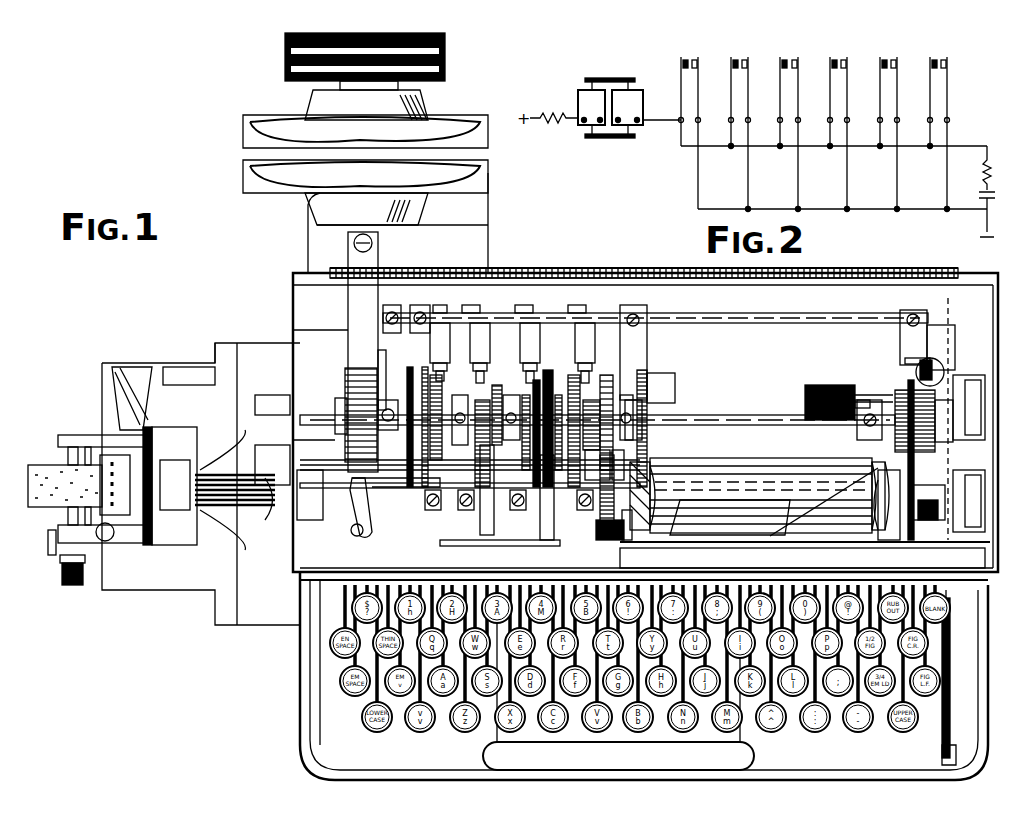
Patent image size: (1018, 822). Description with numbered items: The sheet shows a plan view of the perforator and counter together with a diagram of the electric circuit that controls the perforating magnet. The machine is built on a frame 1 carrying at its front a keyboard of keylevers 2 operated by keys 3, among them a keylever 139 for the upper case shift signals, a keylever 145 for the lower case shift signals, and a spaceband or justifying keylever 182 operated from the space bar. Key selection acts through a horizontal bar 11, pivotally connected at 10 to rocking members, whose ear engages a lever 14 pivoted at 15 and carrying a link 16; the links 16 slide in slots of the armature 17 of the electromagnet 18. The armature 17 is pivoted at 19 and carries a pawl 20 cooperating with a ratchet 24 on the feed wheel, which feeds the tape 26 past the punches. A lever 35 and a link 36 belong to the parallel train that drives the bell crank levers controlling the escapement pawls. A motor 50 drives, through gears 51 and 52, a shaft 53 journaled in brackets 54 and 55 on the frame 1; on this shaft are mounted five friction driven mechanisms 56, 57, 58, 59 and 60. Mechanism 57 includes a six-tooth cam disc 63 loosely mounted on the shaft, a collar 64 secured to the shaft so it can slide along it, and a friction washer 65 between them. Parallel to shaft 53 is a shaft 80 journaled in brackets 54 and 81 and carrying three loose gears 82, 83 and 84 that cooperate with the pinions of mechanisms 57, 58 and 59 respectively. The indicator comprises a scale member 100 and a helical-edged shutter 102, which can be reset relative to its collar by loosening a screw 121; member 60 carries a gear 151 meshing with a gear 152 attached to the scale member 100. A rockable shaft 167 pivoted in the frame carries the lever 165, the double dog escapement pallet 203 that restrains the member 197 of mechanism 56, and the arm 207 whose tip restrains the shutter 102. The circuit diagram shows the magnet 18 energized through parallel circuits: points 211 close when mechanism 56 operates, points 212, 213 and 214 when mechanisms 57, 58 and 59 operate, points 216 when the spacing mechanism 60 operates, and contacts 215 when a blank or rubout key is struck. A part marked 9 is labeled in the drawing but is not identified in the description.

In FIG. 1, the frame 1 is at (312, 683).
In FIG. 1, the keylever 2 is at (832, 735).
In FIG. 1, the key 3 is at (748, 735).
In FIG. 1, the shaft 9 is at (497, 341).
In FIG. 1, the pivot 10 is at (558, 365).
In FIG. 1, the horizontal bar 11 is at (630, 455).
In FIG. 1, the lever 14 is at (405, 295).
In FIG. 1, the pivot 15 is at (612, 480).
In FIG. 1, the link 16 is at (240, 468).
In FIG. 1, the armature 17 is at (395, 404).
In FIG. 1, the electromagnet 18 is at (622, 295).
In FIG. 2, the electromagnet 18 is at (580, 102).
In FIG. 1, the pivot 19 is at (885, 447).
In FIG. 1, the pawl 20 is at (948, 299).
In FIG. 1, the ratchet 24 is at (58, 556).
In FIG. 1, the tape 26 is at (46, 466).
In FIG. 1, the lever 35 is at (292, 420).
In FIG. 1, the link 36 is at (468, 503).
In FIG. 1, the motor 50 is at (292, 176).
In FIG. 1, the gear 51 is at (348, 386).
In FIG. 1, the gear 52 is at (366, 429).
In FIG. 1, the shaft 53 is at (724, 430).
In FIG. 1, the bracket 54 is at (292, 398).
In FIG. 1, the bracket 55 is at (988, 385).
In FIG. 1, the friction driven mechanism 56 is at (445, 328).
In FIG. 1, the friction mechanism 57 is at (480, 330).
In FIG. 1, the friction mechanism 58 is at (530, 332).
In FIG. 1, the friction mechanism 59 is at (603, 392).
In FIG. 1, the friction driven member 60 is at (915, 386).
In FIG. 1, the cam disc 63 is at (532, 428).
In FIG. 1, the collar 64 is at (508, 412).
In FIG. 1, the friction washer 65 is at (496, 421).
In FIG. 1, the shaft 80 is at (688, 490).
In FIG. 1, the bracket 81 is at (968, 482).
In FIG. 1, the gear 82 is at (498, 510).
In FIG. 1, the gear 83 is at (552, 506).
In FIG. 1, the gear 84 is at (600, 540).
In FIG. 1, the scale member 100 is at (828, 538).
In FIG. 1, the helical-edged shutter 102 is at (722, 538).
In FIG. 1, the screw 121 is at (630, 542).
In FIG. 1, the keylever 139 is at (918, 730).
In FIG. 1, the keylever 145 is at (405, 728).
In FIG. 1, the gear 151 is at (900, 410).
In FIG. 1, the gear 152 is at (935, 520).
In FIG. 1, the lever 165 is at (942, 348).
In FIG. 1, the rockable shaft 167 is at (730, 330).
In FIG. 1, the keylever 182 is at (959, 584).
In FIG. 1, the member 197 is at (372, 368).
In FIG. 1, the double dog escapement pallet 203 is at (380, 346).
In FIG. 1, the arm 207 is at (648, 350).
In FIG. 1, the contact points 211 is at (440, 304).
In FIG. 2, the contact points 211 is at (891, 126).
In FIG. 1, the contact points 212 is at (472, 304).
In FIG. 2, the contact points 212 is at (686, 125).
In FIG. 1, the contact points 213 is at (525, 304).
In FIG. 2, the contact points 213 is at (742, 126).
In FIG. 1, the contact points 214 is at (578, 304).
In FIG. 2, the contact points 214 is at (790, 126).
In FIG. 1, the contacts 215 is at (455, 548).
In FIG. 2, the contacts 215 is at (841, 126).
In FIG. 1, the contact points 216 is at (848, 424).
In FIG. 2, the contact points 216 is at (940, 126).